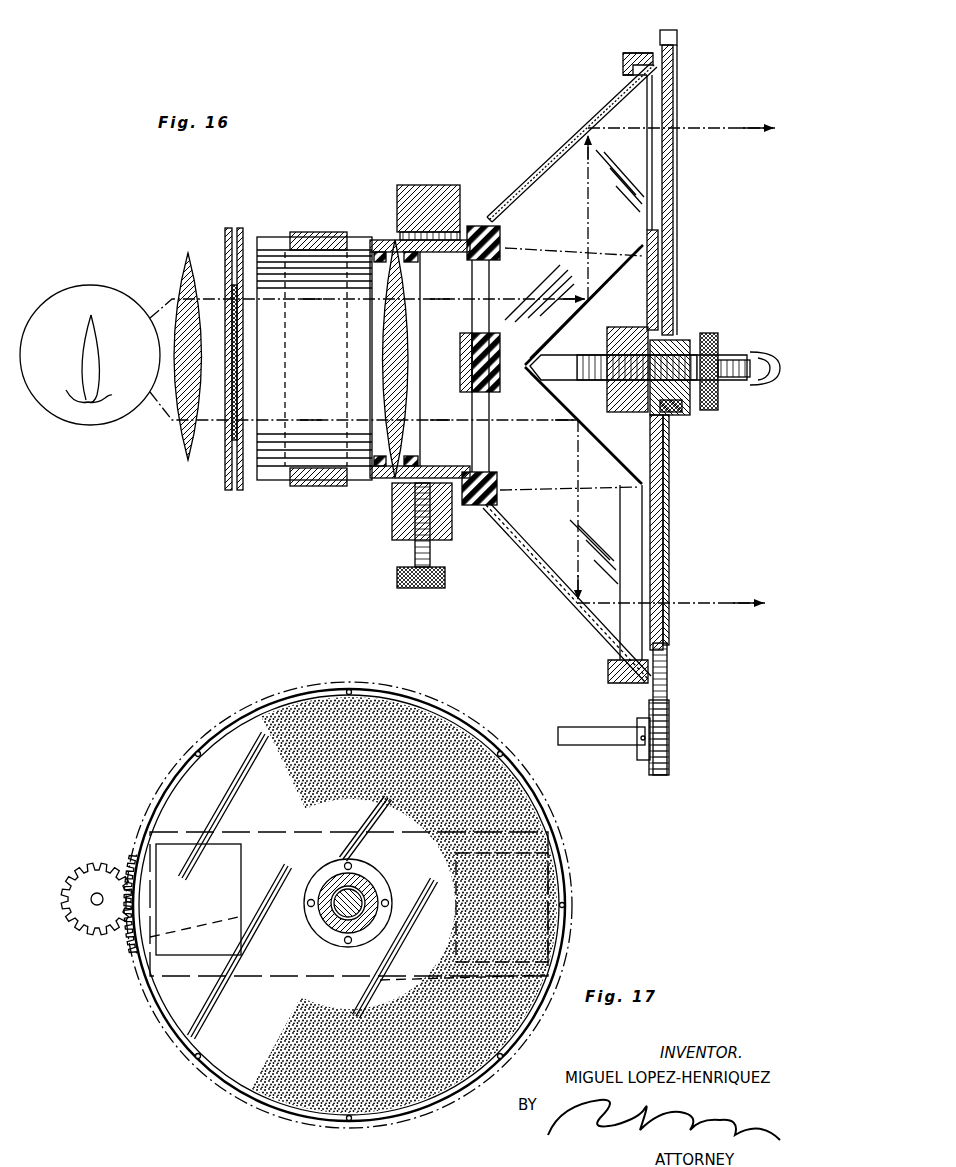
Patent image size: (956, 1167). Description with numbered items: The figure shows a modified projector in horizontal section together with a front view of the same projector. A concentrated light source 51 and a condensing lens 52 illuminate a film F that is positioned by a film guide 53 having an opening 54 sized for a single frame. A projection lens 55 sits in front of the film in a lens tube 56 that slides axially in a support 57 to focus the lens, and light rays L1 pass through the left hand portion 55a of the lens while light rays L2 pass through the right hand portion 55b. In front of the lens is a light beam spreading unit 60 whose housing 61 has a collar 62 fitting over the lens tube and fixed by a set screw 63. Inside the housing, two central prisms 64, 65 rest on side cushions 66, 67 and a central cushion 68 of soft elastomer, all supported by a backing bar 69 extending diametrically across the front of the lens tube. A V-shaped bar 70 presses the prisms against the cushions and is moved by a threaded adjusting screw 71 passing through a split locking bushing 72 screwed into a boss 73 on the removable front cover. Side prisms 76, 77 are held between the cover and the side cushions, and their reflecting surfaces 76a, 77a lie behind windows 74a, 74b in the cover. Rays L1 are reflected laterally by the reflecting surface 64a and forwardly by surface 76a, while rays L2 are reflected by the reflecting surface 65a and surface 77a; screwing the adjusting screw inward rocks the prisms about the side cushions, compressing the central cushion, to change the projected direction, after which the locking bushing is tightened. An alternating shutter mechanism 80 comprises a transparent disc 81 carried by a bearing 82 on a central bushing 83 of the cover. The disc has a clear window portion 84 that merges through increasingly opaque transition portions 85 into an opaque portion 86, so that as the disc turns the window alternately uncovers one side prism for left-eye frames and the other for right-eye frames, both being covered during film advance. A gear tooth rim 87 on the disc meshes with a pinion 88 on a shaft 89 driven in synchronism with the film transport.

In FIG. 16, the concentrated light source 51 is at (65, 292).
In FIG. 16, the condensing lens 52 is at (176, 292).
In FIG. 16, the film F is at (233, 290).
In FIG. 16, the film guide 53 is at (226, 470).
In FIG. 16, the opening 54 is at (236, 432).
In FIG. 16, the projection lens 55 is at (382, 360).
In FIG. 16, the left hand portion of lens 55a is at (390, 250).
In FIG. 16, the right hand portion of lens 55b is at (390, 468).
In FIG. 16, the lens tube 56 is at (392, 520).
In FIG. 16, the support 57 is at (312, 488).
In FIG. 16, the light rays L1 is at (298, 300).
In FIG. 16, the light rays L2 is at (262, 420).
In FIG. 16, the light beam spreading unit 60 is at (602, 98).
In FIG. 17, the light beam spreading unit 60 is at (392, 836).
In FIG. 16, the housing 61 is at (558, 150).
In FIG. 16, the collar 62 is at (414, 545).
In FIG. 16, the set screw 63 is at (426, 589).
In FIG. 16, the prism 64 is at (618, 258).
In FIG. 16, the reflecting surface 64a is at (640, 272).
In FIG. 16, the prism 65 is at (608, 478).
In FIG. 16, the reflecting surface 65a is at (640, 452).
In FIG. 16, the side cushion 66 is at (478, 226).
In FIG. 16, the side cushion 67 is at (478, 506).
In FIG. 16, the central cushion 68 is at (490, 372).
In FIG. 16, the backing bar 69 is at (463, 393).
In FIG. 16, the V-shaped bar 70 is at (560, 352).
In FIG. 16, the threaded adjusting screw 71 is at (746, 358).
In FIG. 16, the split locking bushing 72 is at (710, 333).
In FIG. 16, the boss 73 is at (607, 396).
In FIG. 16, the window 74a is at (656, 224).
In FIG. 17, the window 74a is at (560, 900).
In FIG. 16, the window 74b is at (660, 527).
In FIG. 17, the window 74b is at (163, 930).
In FIG. 16, the prism 76 is at (545, 190).
In FIG. 16, the reflecting surface 76a is at (592, 124).
In FIG. 16, the prism 77 is at (622, 530).
In FIG. 16, the reflecting surface 77a is at (540, 598).
In FIG. 16, the alternating shutter mechanism 80 is at (680, 175).
In FIG. 16, the disc 81 is at (668, 572).
In FIG. 16, the bearing 82 is at (672, 410).
In FIG. 16, the central bushing 83 is at (688, 392).
In FIG. 17, the central bushing 83 is at (326, 915).
In FIG. 17, the clear window portion 84 is at (212, 762).
In FIG. 17, the transition portions 85 is at (278, 1078).
In FIG. 17, the opaque portion 86 is at (512, 826).
In FIG. 16, the gear tooth rim 87 is at (666, 30).
In FIG. 17, the gear tooth rim 87 is at (128, 868).
In FIG. 16, the pinion 88 is at (664, 772).
In FIG. 17, the pinion 88 is at (78, 876).
In FIG. 16, the shaft 89 is at (578, 727).
In FIG. 17, the shaft 89 is at (92, 904).